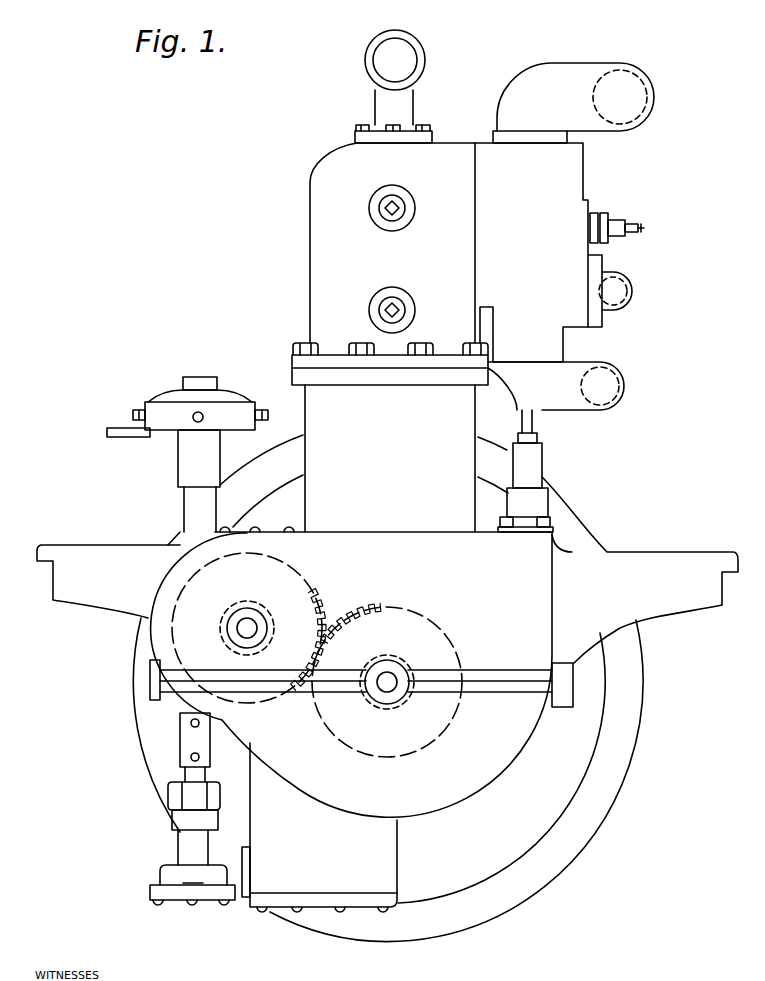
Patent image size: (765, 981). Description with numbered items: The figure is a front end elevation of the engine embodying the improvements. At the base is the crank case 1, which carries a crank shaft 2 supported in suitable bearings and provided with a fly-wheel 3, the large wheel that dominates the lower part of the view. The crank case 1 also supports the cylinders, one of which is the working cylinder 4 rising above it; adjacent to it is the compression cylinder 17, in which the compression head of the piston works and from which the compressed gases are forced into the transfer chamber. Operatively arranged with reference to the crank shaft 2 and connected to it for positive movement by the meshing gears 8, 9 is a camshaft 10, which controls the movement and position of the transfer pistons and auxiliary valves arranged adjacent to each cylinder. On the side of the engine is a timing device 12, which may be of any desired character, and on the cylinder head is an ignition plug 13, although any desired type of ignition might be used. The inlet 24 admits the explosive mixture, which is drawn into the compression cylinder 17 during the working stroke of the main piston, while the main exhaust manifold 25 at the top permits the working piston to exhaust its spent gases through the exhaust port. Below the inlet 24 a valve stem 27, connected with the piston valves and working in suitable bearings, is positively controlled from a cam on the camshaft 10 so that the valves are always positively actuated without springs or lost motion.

The crank case 1 is at (483, 778).
The crank shaft 2 is at (392, 688).
The fly-wheel 3 is at (593, 810).
The cylinder 4 is at (318, 243).
The gear 8 is at (368, 602).
The gear 9 is at (317, 597).
The camshaft 10 is at (245, 628).
The timing device 12 is at (163, 410).
The ignition plug 13 is at (605, 218).
The compression cylinder 17 is at (330, 425).
The inlet 24 is at (618, 402).
The main exhaust manifold 25 is at (628, 86).
The valve stem 27 is at (528, 422).